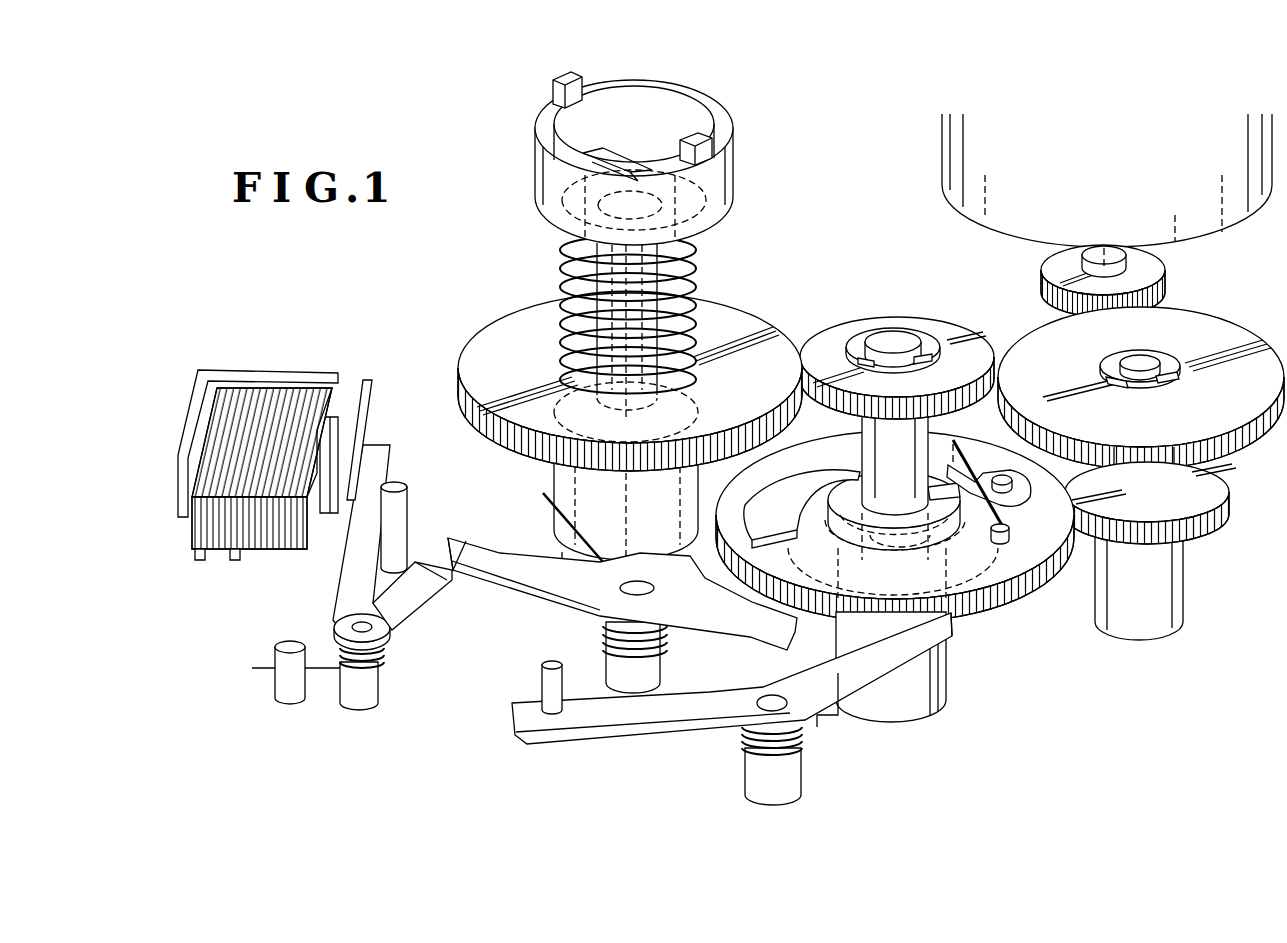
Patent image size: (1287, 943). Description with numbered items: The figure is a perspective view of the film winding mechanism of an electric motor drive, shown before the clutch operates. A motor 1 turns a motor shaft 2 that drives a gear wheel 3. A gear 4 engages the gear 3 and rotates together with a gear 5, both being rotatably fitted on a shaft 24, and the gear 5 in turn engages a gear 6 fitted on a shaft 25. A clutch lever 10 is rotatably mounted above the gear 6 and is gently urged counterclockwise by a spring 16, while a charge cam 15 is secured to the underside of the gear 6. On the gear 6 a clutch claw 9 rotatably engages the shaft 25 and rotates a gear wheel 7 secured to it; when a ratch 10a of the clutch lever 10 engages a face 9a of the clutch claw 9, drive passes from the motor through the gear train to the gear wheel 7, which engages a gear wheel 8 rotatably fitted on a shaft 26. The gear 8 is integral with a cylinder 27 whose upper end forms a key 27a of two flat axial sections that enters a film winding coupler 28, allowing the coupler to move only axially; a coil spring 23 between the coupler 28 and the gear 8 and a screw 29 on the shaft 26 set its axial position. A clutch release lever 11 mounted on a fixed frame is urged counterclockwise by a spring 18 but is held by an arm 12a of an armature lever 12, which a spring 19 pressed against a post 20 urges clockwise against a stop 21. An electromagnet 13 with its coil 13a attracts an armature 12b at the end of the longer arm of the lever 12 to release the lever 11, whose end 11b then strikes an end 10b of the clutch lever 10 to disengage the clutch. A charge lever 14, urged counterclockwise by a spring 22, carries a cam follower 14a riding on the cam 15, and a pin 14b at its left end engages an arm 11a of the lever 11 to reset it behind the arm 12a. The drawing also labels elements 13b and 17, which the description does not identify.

The motor 1 is at (1228, 213).
The motor shaft 2 is at (1118, 262).
The gear wheel 3 is at (1150, 277).
The gear 4 is at (1222, 335).
The gear 5 is at (1215, 486).
The gear 6 is at (1020, 580).
The gear wheel 7 is at (922, 325).
The gear wheel 8 is at (748, 330).
The clutch claw 9 is at (935, 522).
The face of clutch claw 9a is at (945, 503).
The clutch lever 10 is at (985, 470).
The ratch of clutch lever 10a is at (938, 472).
The end of clutch lever 10b is at (742, 528).
The clutch release lever 11 is at (697, 610).
The arm of clutch release lever 11a is at (460, 548).
The end of clutch release lever 11b is at (606, 636).
The armature lever 12 is at (378, 618).
The arm of armature lever 12a is at (425, 590).
The armature 12b is at (372, 392).
The electromagnet 13 is at (242, 392).
The coil of electromagnet 13a is at (282, 390).
The frame 13b is at (322, 372).
The charge lever 14 is at (668, 712).
The cam follower 14a is at (950, 612).
The pin 14b is at (542, 683).
The charge cam 15 is at (978, 578).
The spring 16 is at (962, 458).
The pin 17 is at (1010, 530).
The spring 18 is at (563, 547).
The spring 19 is at (324, 672).
The post 20 is at (290, 645).
The stop 21 is at (405, 502).
The spring 22 is at (838, 716).
The coil spring 23 is at (694, 268).
The shaft 24 is at (1145, 374).
The shaft 25 is at (893, 335).
The shaft 26 is at (617, 322).
The cylinder 27 is at (668, 300).
The key 27a is at (575, 202).
The film winding coupler 28 is at (733, 177).
The screw 29 is at (588, 157).